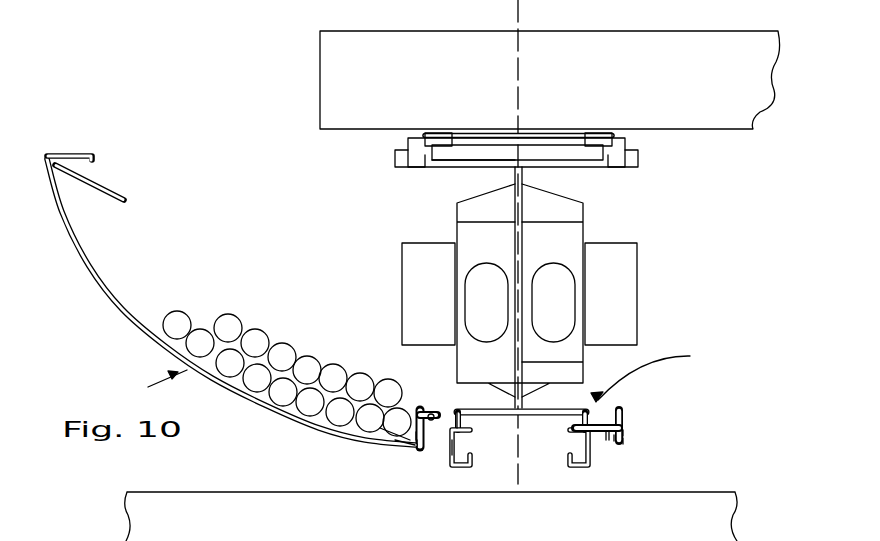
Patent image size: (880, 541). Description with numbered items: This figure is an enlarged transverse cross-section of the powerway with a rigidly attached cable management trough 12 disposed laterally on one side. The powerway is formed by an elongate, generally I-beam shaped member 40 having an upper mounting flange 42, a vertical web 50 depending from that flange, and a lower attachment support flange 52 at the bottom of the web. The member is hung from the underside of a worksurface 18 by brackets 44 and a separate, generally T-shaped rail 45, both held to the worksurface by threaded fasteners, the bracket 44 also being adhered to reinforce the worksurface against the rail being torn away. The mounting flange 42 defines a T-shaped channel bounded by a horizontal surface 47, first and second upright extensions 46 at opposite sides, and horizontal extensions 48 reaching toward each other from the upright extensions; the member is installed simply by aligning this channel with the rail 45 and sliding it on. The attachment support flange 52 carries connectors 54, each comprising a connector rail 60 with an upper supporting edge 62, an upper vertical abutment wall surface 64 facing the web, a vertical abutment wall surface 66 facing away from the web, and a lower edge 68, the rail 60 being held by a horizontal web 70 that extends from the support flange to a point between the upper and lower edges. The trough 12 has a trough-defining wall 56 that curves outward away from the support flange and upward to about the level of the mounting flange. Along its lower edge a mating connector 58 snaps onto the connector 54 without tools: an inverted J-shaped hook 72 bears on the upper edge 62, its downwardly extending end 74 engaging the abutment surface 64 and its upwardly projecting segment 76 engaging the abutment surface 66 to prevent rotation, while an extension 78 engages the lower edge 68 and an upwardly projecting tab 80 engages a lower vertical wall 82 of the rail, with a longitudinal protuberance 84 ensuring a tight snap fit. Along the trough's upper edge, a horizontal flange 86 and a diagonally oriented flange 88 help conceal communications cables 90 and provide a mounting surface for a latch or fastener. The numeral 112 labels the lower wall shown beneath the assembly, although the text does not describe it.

The cable management trough 12 is at (147, 384).
The worksurface 18 is at (742, 43).
The elongate member 40 is at (655, 371).
The upper mounting flange 42 is at (587, 162).
The bracket 44 is at (585, 140).
The T-shaped rail 45 is at (548, 147).
The upright extensions 46 is at (425, 167).
The horizontal surface 47 is at (503, 151).
The horizontal extensions 48 is at (437, 136).
The vertical web 50 is at (562, 360).
The lower attachment support flange 52 is at (543, 416).
The connector 54 is at (437, 430).
The trough-defining wall 56 is at (108, 277).
The mating connector 58 is at (395, 438).
The connector rail 60 is at (623, 440).
The upper supporting edge 62 is at (617, 410).
The upper vertical abutment wall surface 64 is at (446, 408).
The vertical abutment wall surface 66 is at (623, 433).
The lower edge 68 is at (613, 442).
The horizontal web 70 is at (605, 438).
The inverted J-shaped hook 72 is at (418, 408).
The downwardly extending end 74 is at (410, 416).
The upwardly projecting segment 76 is at (412, 445).
The extension 78 is at (430, 447).
The upwardly projecting tab 80 is at (440, 432).
The lower vertical wall 82 is at (608, 440).
The longitudinal protuberance 84 is at (556, 443).
The horizontal flange 86 is at (70, 152).
The diagonally oriented flange 88 is at (116, 194).
The communications cables 90 is at (287, 396).
The base wall 112 is at (455, 539).